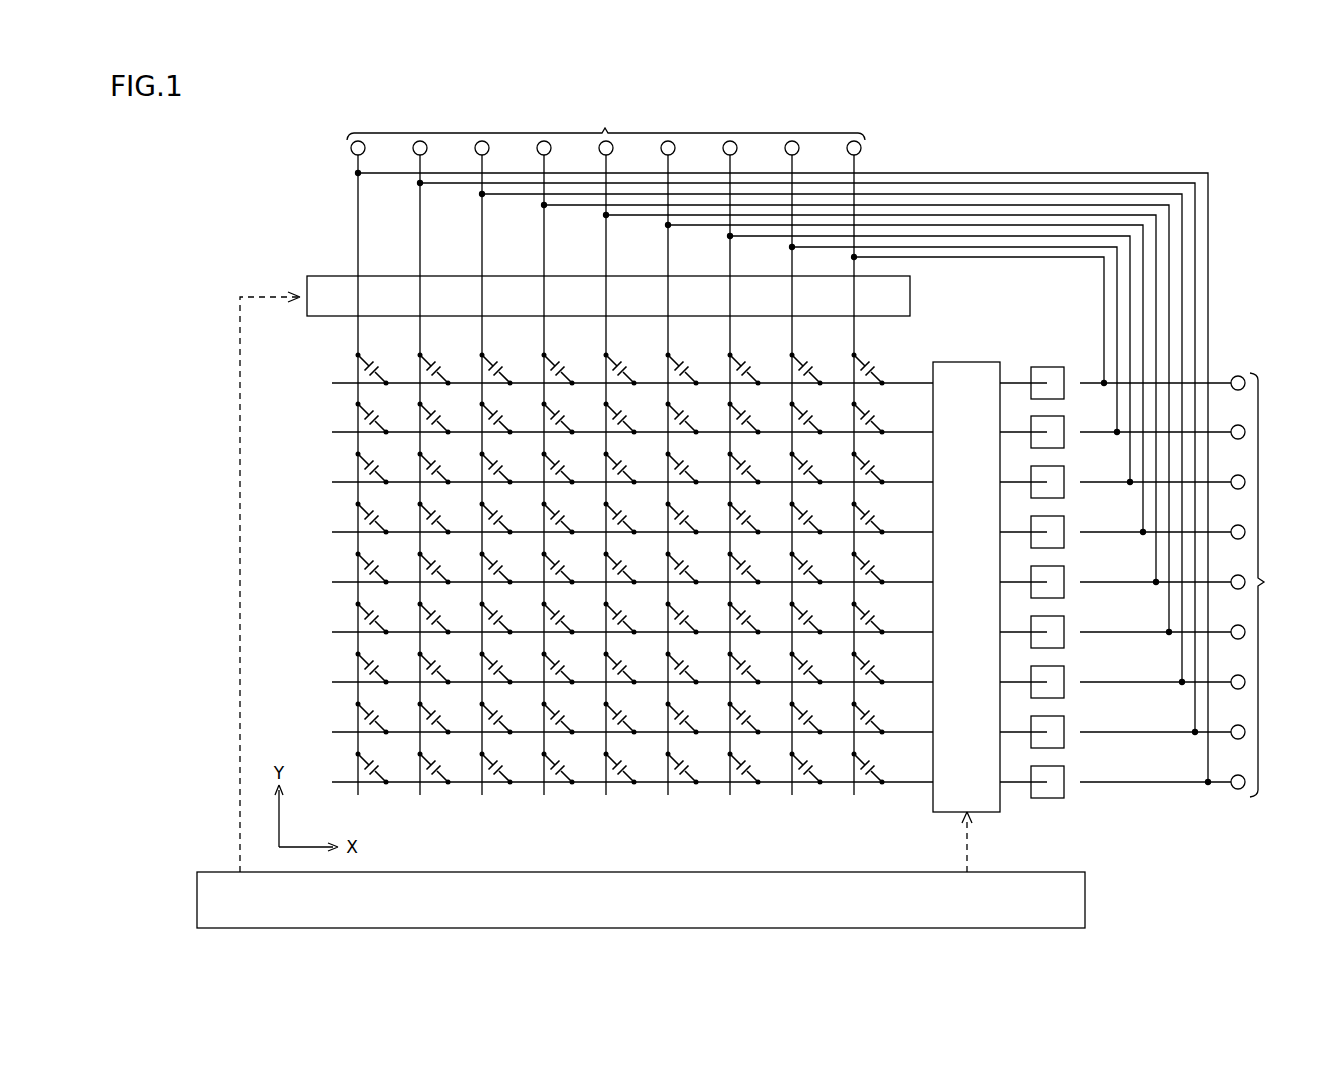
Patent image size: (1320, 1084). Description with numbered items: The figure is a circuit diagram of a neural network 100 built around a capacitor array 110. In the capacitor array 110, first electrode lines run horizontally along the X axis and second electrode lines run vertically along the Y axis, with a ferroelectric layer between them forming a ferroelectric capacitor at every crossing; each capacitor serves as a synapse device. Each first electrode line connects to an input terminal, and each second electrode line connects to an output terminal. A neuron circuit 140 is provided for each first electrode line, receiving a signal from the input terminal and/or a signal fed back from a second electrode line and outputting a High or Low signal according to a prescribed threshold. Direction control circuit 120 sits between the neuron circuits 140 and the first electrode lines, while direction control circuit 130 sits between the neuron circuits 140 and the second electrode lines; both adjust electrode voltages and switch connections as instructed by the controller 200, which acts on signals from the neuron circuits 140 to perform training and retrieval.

The neural network 100 is at (781, 472).
The capacitor array 110 is at (311, 398).
The direction control circuit 120 is at (983, 812).
The direction control circuit 130 is at (338, 277).
The neuron circuit 140 is at (1081, 790).
The controller 200 is at (1030, 872).